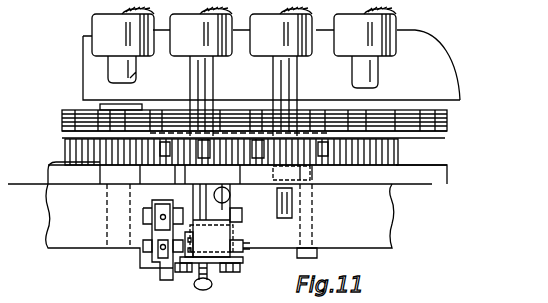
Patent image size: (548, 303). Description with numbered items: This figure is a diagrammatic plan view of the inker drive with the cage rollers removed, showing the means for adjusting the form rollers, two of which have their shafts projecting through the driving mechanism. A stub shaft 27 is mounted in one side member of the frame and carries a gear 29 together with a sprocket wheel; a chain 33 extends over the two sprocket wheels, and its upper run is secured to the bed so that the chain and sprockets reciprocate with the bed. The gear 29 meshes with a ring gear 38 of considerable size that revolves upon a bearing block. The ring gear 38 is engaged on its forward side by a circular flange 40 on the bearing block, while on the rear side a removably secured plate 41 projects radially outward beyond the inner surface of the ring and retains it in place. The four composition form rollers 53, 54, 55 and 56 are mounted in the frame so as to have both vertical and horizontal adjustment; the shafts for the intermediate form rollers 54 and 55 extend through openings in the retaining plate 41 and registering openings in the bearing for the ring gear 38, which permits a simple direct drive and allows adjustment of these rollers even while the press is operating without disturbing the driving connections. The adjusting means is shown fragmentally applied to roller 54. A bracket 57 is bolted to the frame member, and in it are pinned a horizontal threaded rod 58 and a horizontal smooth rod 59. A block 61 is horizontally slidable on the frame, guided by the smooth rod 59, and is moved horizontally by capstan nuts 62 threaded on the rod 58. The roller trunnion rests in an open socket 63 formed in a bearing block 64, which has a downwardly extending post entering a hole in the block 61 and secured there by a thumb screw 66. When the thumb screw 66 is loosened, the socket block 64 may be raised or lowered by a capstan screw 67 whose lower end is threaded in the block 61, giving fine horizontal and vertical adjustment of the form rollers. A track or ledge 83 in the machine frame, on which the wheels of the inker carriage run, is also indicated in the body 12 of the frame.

The base body 12 is at (24, 193).
The stub shaft 27 is at (117, 210).
The gear 29 is at (92, 172).
The chain 33 is at (418, 138).
The ring gear 38 is at (348, 153).
The circular flange 40 is at (330, 172).
The plate 41 is at (330, 140).
The form roller 53 is at (100, 24).
The form roller 54 is at (183, 55).
The form roller 55 is at (265, 55).
The form roller 56 is at (351, 55).
The bracket 57 is at (156, 275).
The threaded rod 58 is at (243, 240).
The smooth rod 59 is at (242, 214).
The block 61 is at (232, 263).
The capstan nut 62 is at (243, 259).
The open socket 63 is at (199, 242).
The bearing block 64 is at (191, 197).
The thumb screw 66 is at (208, 286).
The capstan screw 67 is at (230, 195).
The track 83 is at (398, 168).